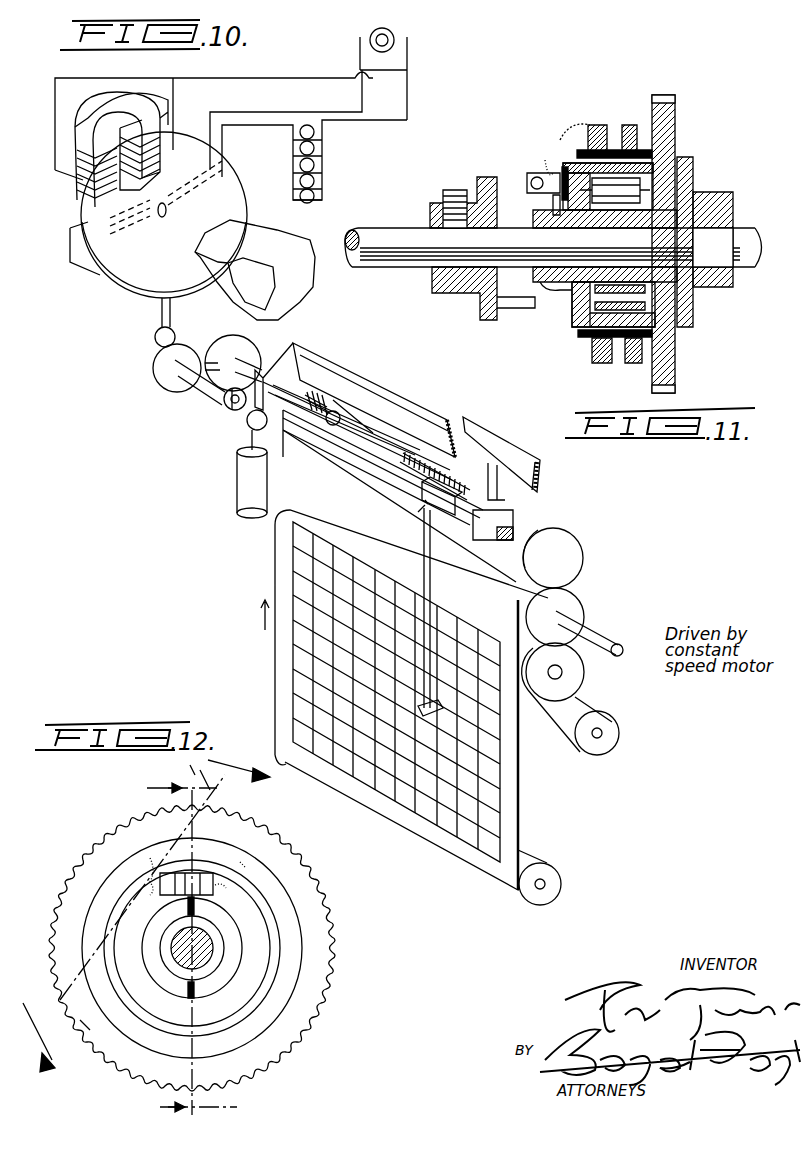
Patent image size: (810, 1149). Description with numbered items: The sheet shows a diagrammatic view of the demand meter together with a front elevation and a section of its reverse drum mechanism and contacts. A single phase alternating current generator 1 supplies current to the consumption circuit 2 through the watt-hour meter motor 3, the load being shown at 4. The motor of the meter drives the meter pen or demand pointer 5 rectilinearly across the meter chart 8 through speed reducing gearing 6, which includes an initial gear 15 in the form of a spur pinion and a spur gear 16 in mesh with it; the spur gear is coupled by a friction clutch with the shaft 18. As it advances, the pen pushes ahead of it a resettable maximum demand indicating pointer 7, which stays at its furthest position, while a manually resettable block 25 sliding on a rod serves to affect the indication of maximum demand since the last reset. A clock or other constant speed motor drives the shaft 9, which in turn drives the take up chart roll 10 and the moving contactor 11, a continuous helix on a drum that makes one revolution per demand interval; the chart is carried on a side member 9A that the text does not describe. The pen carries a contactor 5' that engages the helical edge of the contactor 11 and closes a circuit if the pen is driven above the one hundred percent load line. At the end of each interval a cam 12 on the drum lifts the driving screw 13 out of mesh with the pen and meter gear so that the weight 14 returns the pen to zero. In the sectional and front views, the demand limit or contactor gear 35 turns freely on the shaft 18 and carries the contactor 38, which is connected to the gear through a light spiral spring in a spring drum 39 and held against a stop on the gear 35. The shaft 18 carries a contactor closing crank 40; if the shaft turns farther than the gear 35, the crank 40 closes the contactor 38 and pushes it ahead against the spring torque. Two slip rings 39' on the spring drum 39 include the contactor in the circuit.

In FIG. 10, the single phase alternating current generator 1 is at (392, 43).
In FIG. 10, the consumption circuit 2 is at (335, 144).
In FIG. 12, the consumption circuit 2 is at (148, 926).
In FIG. 10, the watt-hour meter motor 3 is at (81, 206).
In FIG. 10, the load 4 is at (307, 203).
In FIG. 10, the meter pen or demand pointer 5 is at (404, 683).
In FIG. 10, the contactor 5' is at (434, 530).
In FIG. 10, the speed reducing gearing 6 is at (195, 362).
In FIG. 10, the resettable maximum demand indicating pointer 7 is at (512, 495).
In FIG. 10, the meter chart 8 is at (543, 465).
In FIG. 10, the shaft 9 is at (655, 632).
In FIG. 10, the side frame 9A is at (510, 812).
In FIG. 10, the take up chart roll 10 is at (612, 730).
In FIG. 10, the moving contactor 11 is at (553, 525).
In FIG. 12, the moving contactor 11 is at (178, 947).
In FIG. 10, the cam 12 is at (283, 445).
In FIG. 10, the driving screw 13 is at (400, 440).
In FIG. 10, the weight 14 is at (237, 490).
In FIG. 10, the initial gear 15 is at (155, 338).
In FIG. 10, the spur gear 16 is at (153, 380).
In FIG. 11, the shaft 18 is at (372, 235).
In FIG. 12, the shaft 18 is at (210, 960).
In FIG. 10, the manually resettable block 25 is at (488, 538).
In FIG. 11, the demand limit or contactor gear 35 is at (547, 212).
In FIG. 12, the demand limit or contactor gear 35 is at (196, 908).
In FIG. 11, the contactor 38 is at (534, 173).
In FIG. 12, the contactor 38 is at (178, 873).
In FIG. 11, the spring drum 39 is at (592, 359).
In FIG. 12, the spring drum 39 is at (243, 948).
In FIG. 11, the slip rings 39' is at (615, 107).
In FIG. 12, the slip rings 39' is at (269, 948).
In FIG. 11, the contactor closing crank 40 is at (512, 310).